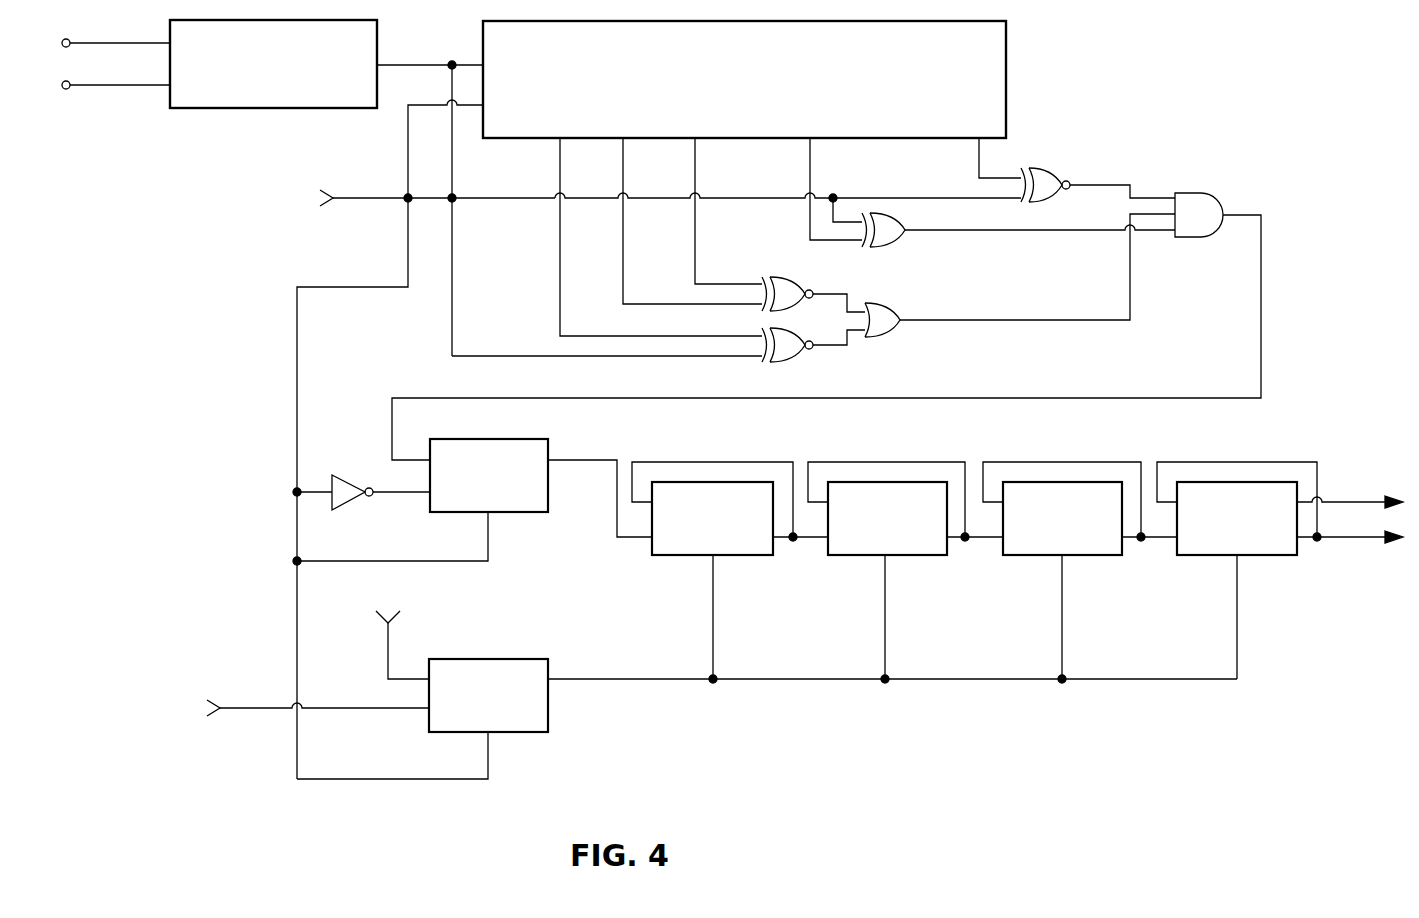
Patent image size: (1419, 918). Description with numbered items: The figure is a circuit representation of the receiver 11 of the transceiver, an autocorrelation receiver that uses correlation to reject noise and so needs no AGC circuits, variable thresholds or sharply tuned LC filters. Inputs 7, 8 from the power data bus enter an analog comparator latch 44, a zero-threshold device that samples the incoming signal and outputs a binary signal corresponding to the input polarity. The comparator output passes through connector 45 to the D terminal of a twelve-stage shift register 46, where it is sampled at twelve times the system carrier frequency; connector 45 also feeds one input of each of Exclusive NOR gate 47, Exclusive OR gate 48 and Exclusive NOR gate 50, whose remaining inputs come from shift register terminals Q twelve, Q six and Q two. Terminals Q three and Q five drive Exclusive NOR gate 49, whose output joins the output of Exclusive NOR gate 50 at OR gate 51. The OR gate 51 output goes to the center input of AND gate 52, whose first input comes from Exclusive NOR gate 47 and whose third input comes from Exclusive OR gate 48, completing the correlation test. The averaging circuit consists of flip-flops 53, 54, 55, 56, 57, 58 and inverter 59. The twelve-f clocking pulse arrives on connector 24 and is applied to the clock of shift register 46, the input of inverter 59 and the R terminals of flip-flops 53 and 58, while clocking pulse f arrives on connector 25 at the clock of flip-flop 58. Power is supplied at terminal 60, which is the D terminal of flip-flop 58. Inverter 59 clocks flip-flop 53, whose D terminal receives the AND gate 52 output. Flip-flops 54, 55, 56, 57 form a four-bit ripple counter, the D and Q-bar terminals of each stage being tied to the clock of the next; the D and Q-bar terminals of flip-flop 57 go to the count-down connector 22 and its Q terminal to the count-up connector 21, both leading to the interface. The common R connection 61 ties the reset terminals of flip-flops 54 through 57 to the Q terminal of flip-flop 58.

The input 7 is at (69, 39).
The input 8 is at (67, 89).
The receiver 11 is at (958, 811).
The count-up connector 21 is at (1358, 500).
The count-down connector 22 is at (1355, 540).
The connector 24 is at (352, 200).
The connector 25 is at (243, 710).
The analog comparator latch 44 is at (226, 110).
The connector 45 is at (420, 62).
The twelve-stage shift register 46 is at (1006, 74).
The Exclusive NOR gate 47 is at (1057, 168).
The Exclusive OR gate 48 is at (898, 242).
The Exclusive NOR gate 49 is at (788, 276).
The Exclusive NOR gate 50 is at (798, 358).
The OR gate 51 is at (888, 333).
The AND gate 52 is at (1199, 192).
The flip-flop 53 is at (472, 502).
The flip-flop 54 is at (730, 570).
The flip-flop 55 is at (905, 570).
The flip-flop 56 is at (1080, 570).
The flip-flop 57 is at (1237, 570).
The flip-flop 58 is at (422, 719).
The inverter 59 is at (352, 502).
The power input terminal 60 is at (388, 648).
The common R connection 61 is at (963, 681).